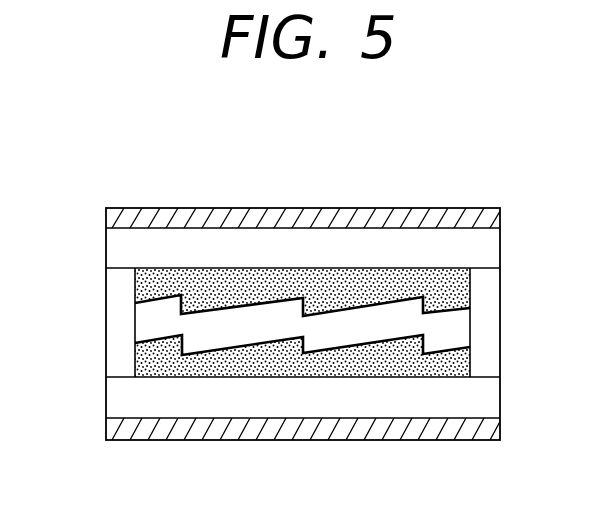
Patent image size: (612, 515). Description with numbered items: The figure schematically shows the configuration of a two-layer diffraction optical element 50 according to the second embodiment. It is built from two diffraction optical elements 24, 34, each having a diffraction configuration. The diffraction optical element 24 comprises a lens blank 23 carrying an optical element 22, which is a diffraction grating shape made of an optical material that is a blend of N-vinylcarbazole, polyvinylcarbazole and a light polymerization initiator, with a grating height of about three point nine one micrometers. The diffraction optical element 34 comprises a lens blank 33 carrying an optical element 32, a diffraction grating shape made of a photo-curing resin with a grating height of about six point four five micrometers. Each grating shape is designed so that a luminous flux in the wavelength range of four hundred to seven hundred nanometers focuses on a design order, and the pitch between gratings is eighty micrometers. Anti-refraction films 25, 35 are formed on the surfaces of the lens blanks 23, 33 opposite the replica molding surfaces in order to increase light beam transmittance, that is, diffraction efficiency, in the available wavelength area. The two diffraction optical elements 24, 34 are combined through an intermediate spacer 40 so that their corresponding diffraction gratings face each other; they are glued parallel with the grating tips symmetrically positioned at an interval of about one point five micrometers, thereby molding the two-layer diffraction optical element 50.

The two-layer diffraction optical element 50 is at (222, 190).
The optical element 22 is at (322, 285).
The lens blank 23 is at (376, 235).
The anti-refraction film 25 is at (461, 218).
The diffraction optical element 24 is at (267, 208).
The spacer 40 is at (120, 297).
The diffraction optical element 34 is at (267, 439).
The lens blank 33 is at (203, 405).
The anti-refraction film 35 is at (150, 430).
The optical element 32 is at (362, 360).